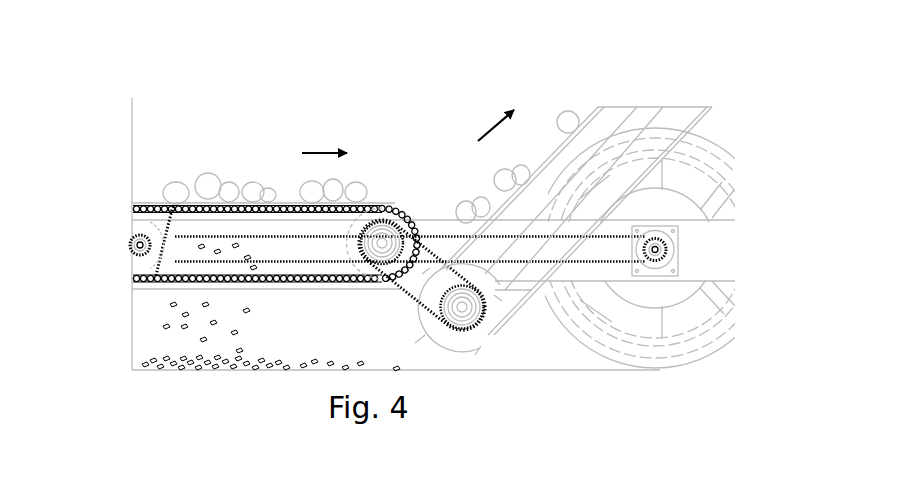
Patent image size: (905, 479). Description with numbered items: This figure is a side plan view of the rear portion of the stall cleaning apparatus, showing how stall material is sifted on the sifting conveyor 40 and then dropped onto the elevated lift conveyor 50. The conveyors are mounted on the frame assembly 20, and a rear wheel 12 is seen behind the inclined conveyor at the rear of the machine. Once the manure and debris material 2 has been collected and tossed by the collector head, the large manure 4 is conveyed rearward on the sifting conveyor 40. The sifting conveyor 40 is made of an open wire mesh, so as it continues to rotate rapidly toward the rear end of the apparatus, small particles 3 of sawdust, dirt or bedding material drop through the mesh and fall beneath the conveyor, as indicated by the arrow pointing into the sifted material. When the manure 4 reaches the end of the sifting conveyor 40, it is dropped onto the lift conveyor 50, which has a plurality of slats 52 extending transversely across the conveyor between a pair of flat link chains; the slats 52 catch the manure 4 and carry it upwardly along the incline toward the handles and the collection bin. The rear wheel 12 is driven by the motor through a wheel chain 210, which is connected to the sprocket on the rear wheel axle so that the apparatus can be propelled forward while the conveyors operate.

The manure and debris material 2 is at (150, 166).
The small particles 3 is at (160, 325).
The manure 4 is at (205, 171).
The sifting conveyor 40 is at (287, 198).
The material lift conveyor 50 is at (600, 104).
The rear wheel 12 is at (692, 175).
The frame assembly 20 is at (728, 272).
The slats 52 is at (533, 308).
The wheel chain 210 is at (605, 262).